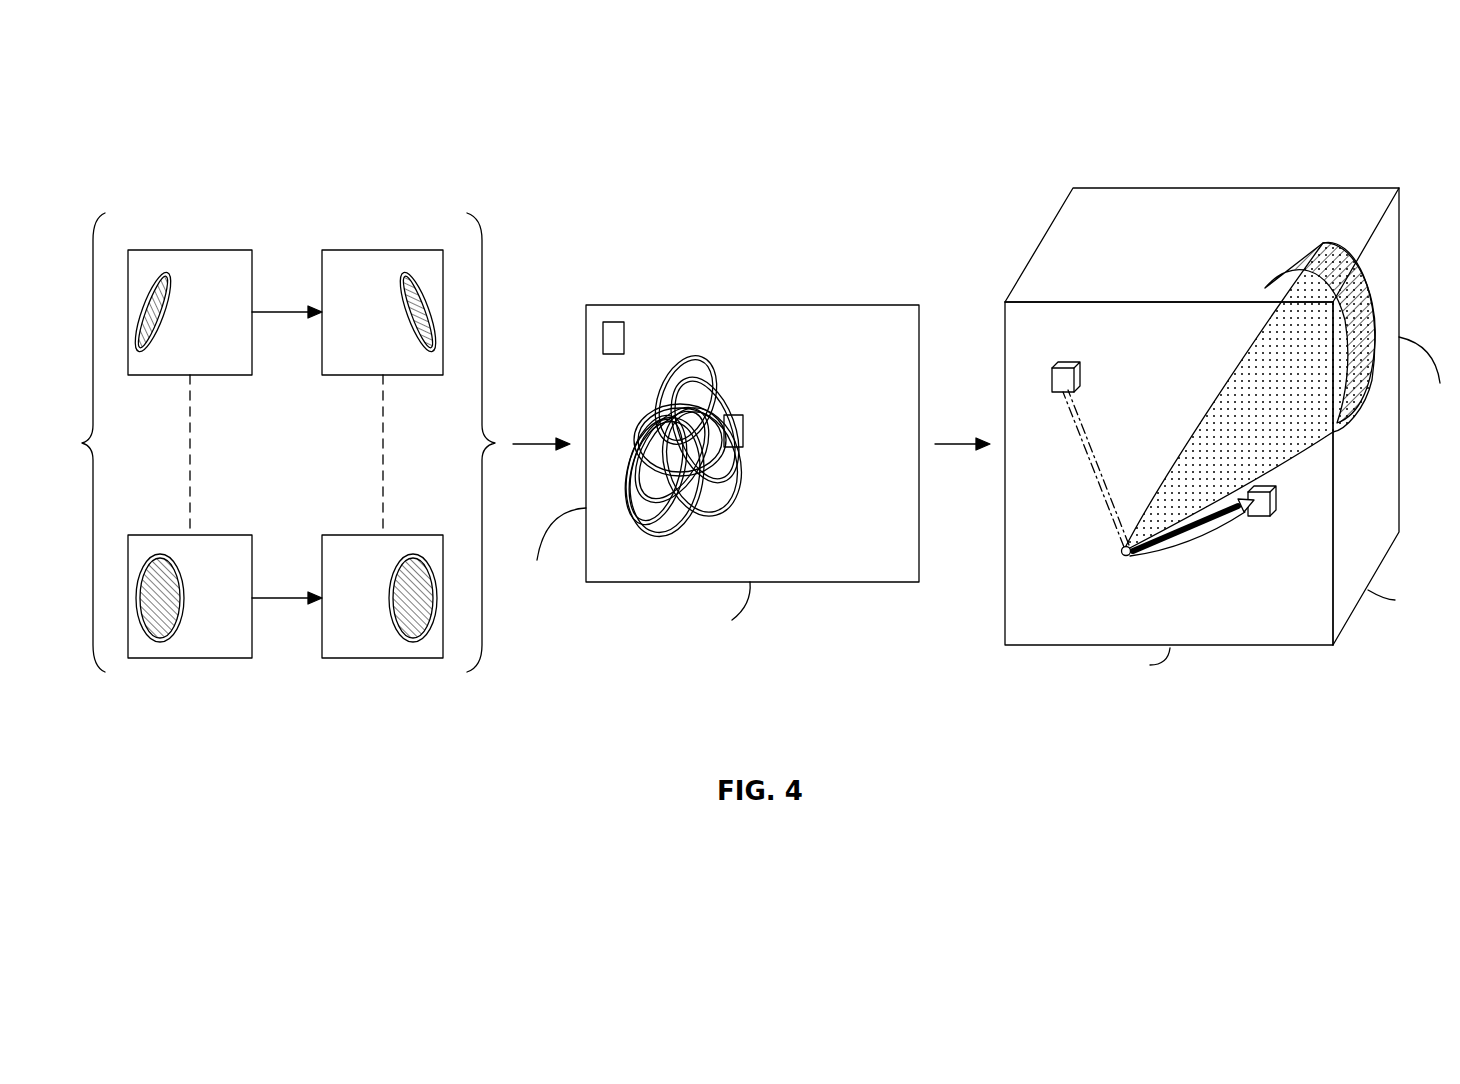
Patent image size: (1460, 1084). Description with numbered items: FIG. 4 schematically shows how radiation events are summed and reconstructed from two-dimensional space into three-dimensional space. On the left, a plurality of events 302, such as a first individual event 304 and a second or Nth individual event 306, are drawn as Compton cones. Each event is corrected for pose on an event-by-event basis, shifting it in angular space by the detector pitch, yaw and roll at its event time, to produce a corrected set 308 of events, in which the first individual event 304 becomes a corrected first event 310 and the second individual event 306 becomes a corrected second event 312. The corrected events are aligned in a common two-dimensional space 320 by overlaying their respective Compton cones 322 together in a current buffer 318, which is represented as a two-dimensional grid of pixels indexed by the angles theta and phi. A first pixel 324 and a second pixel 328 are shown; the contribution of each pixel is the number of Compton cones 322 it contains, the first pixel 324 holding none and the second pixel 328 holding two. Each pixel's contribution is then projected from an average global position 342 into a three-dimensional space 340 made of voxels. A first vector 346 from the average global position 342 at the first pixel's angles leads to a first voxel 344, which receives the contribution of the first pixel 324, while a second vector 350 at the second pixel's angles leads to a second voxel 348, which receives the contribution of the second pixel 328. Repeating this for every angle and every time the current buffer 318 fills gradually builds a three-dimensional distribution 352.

The plurality of events 302 is at (196, 192).
The first individual event 304 is at (168, 262).
The second (or Nth) individual event 306 is at (168, 546).
The corrected set of events 308 is at (370, 192).
The corrected first event 310 is at (406, 262).
The corrected second (or Nth) event 312 is at (406, 546).
The current buffer 318 is at (861, 305).
The two-dimensional space 320 is at (872, 200).
The respective Compton cones 322 is at (724, 533).
The first pixel 324 is at (615, 322).
The second pixel 328 is at (743, 435).
The three-dimensional space 340 is at (1303, 156).
The average global position 342 is at (1124, 560).
The first voxel 344 is at (1065, 360).
The first vector 346 is at (1097, 488).
The second voxel 348 is at (1265, 520).
The second vector 350 is at (1188, 542).
The three-dimensional distribution 352 is at (1256, 280).